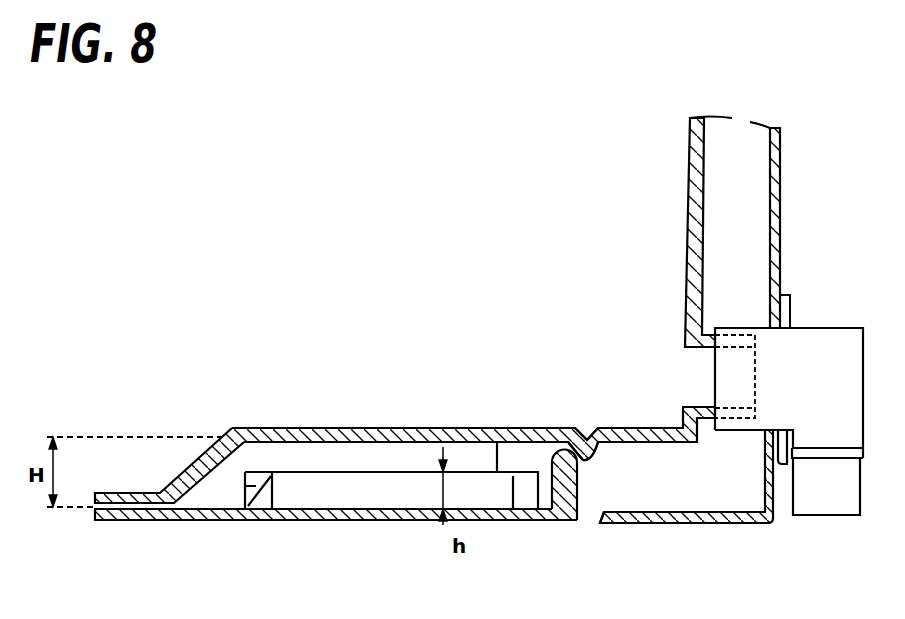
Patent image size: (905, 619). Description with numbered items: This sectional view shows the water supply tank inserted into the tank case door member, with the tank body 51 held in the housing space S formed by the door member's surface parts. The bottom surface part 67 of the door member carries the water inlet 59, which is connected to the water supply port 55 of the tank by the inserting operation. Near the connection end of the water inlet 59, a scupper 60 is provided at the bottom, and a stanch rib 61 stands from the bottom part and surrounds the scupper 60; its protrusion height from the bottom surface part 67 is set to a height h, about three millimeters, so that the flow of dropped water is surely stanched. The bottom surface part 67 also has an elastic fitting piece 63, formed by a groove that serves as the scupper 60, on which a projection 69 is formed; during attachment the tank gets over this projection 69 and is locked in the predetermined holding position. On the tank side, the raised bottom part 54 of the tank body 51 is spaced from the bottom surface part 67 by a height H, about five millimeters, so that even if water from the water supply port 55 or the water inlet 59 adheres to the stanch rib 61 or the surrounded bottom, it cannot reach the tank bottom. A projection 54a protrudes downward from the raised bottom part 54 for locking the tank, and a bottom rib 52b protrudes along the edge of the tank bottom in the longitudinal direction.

The tank body 51 is at (698, 125).
The housing space S is at (736, 136).
The water inlet 59 is at (817, 328).
The water supply port 55 is at (715, 372).
The stanch rib 61 is at (240, 488).
The bottom rib 52b is at (387, 453).
The projection 54a is at (587, 430).
The raised bottom part 54 is at (258, 451).
The elastic fitting piece 63 is at (530, 523).
The projection 69 is at (567, 520).
The bottom surface part 67 is at (688, 514).
The scupper 60 is at (590, 515).